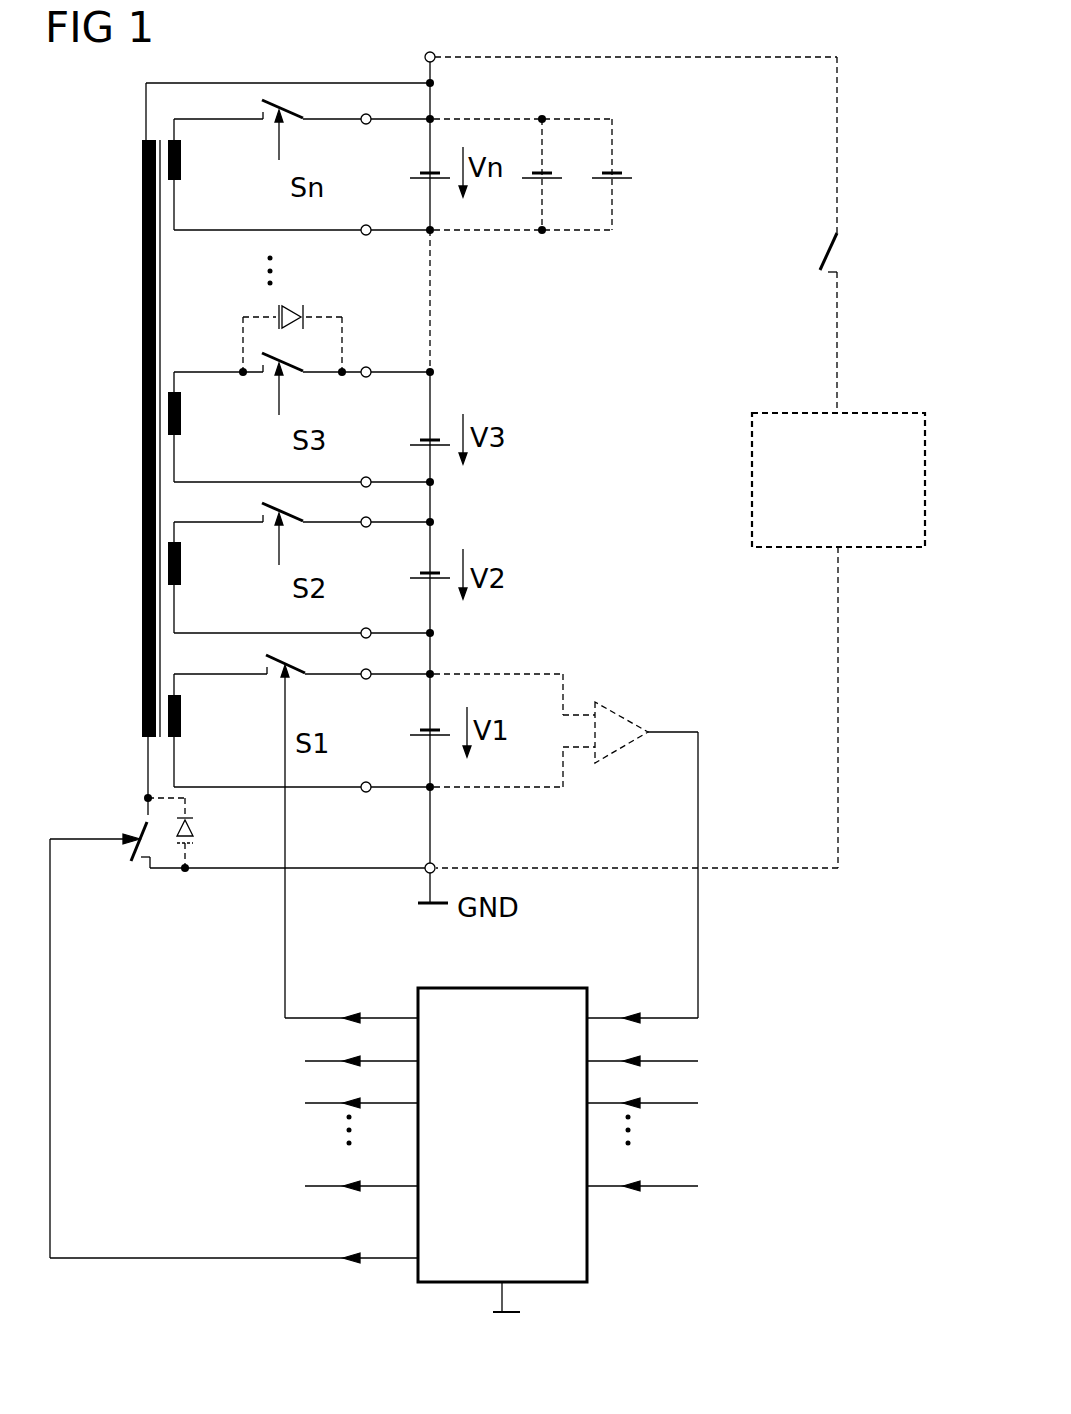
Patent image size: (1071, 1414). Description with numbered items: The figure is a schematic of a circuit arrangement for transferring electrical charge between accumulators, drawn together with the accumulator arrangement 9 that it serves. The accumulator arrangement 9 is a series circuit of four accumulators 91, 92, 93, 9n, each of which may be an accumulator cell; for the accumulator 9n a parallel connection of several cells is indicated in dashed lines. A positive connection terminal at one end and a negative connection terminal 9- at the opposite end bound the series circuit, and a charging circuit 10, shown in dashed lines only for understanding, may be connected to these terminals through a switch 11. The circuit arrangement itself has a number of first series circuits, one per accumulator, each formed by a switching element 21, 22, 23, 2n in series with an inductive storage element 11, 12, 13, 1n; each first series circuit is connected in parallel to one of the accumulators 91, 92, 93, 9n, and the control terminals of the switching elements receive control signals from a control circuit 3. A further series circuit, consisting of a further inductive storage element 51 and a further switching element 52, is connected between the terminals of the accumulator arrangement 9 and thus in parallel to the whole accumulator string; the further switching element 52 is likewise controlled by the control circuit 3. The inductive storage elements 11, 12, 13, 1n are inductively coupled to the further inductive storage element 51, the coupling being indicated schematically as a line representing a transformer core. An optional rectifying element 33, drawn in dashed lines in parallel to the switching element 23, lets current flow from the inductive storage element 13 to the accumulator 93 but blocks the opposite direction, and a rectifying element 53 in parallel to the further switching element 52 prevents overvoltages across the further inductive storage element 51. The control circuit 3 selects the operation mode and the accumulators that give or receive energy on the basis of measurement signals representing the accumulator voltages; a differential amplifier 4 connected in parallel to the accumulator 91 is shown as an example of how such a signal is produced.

The inductive storage element 1n is at (181, 162).
The switching element 2n is at (284, 121).
The accumulator 9n is at (416, 176).
The accumulator arrangement 9 is at (519, 96).
The second connection terminal 9- is at (430, 874).
The protection diode 33 is at (288, 308).
The inductive storage element 13 is at (181, 415).
The switching element 23 is at (286, 374).
The accumulator 93 is at (416, 444).
The further inductive storage element 51 is at (142, 426).
The inductive storage element 12 is at (181, 563).
The switching element 22 is at (286, 524).
The accumulator 92 is at (416, 577).
The inductive storage element 11 is at (181, 718).
The switching element 21 is at (290, 678).
The accumulator 91 is at (416, 732).
The differential amplifier 4 is at (616, 712).
The charging circuit 10 is at (864, 412).
The further switching element 52 is at (140, 833).
The discharge diode 53 is at (195, 836).
The control circuit 3 is at (500, 988).